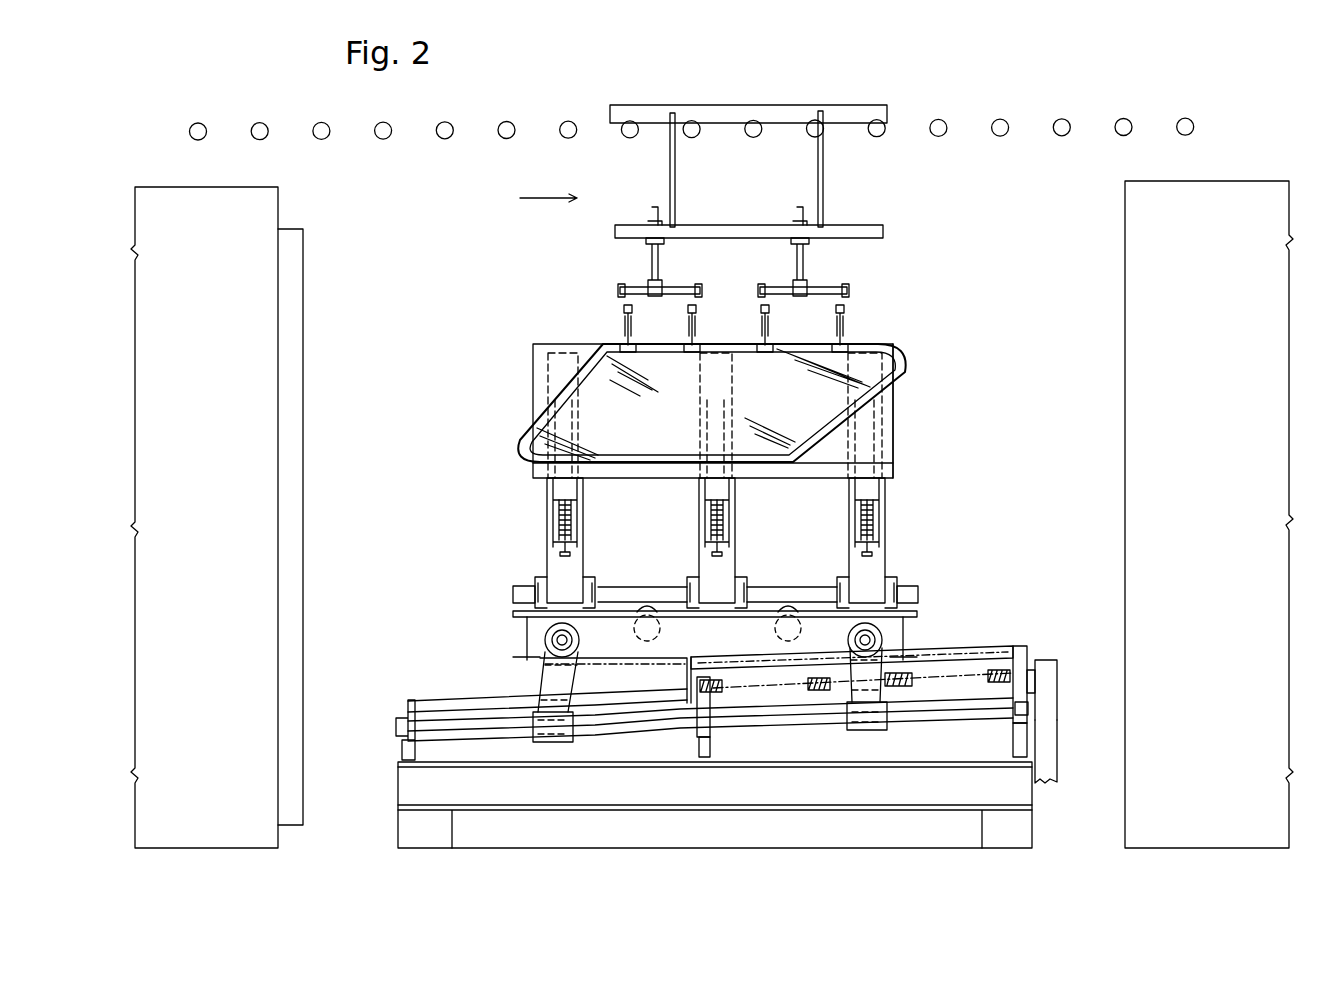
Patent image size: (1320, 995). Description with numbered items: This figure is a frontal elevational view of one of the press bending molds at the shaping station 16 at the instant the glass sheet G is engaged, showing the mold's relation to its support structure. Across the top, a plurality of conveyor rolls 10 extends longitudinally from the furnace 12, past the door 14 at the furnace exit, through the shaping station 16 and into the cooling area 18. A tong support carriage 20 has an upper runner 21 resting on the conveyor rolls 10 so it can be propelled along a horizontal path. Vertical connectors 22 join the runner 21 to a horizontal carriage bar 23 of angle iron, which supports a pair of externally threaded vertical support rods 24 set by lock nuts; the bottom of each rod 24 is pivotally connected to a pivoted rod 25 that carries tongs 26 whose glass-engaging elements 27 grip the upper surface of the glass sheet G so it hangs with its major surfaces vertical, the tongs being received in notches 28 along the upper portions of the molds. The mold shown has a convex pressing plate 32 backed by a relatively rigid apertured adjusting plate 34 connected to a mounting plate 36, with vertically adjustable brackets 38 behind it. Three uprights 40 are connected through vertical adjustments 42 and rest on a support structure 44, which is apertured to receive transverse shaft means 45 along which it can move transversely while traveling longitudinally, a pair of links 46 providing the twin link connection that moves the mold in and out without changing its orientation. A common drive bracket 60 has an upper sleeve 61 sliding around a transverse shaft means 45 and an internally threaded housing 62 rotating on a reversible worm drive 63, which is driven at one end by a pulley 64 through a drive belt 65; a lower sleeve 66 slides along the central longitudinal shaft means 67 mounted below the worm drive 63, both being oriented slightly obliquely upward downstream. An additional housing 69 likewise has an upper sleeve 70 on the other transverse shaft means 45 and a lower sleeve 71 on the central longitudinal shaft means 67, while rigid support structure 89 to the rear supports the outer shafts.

The conveyor rolls 10 is at (448, 139).
The furnace 12 is at (222, 190).
The door 14 is at (293, 540).
The shaping station 16 is at (559, 230).
The cooling area 18 is at (1219, 168).
The tong support carriage 20 is at (762, 228).
The upper runner 21 is at (727, 122).
The vertical connectors 22 is at (670, 158).
The horizontal carriage bar 23 is at (718, 227).
The vertical support rods 24 is at (658, 266).
The pivoted rod 25 is at (792, 288).
The tongs 26 is at (694, 325).
The glass-engaging elements 27 is at (629, 346).
The notches 28 is at (773, 349).
The convex pressing plate 32 is at (915, 363).
The apertured adjusting plate 34 is at (893, 468).
The mounting plates 36 is at (895, 440).
The vertically adjustable brackets 38 is at (533, 376).
The uprights 40 is at (583, 552).
The vertical adjustments 42 is at (572, 515).
The support structure 44 is at (697, 635).
The transverse shaft means 45 is at (579, 641).
The links 46 is at (646, 612).
The common drive bracket 60 is at (845, 662).
The upper sleeve 61 is at (906, 636).
The internally threaded housing 62 is at (840, 690).
The worm drive 63 is at (752, 697).
The pulley 64 is at (1060, 668).
The drive belt 65 is at (1052, 740).
The lower sleeve 66 is at (880, 730).
The central longitudinal shaft means 67 is at (791, 716).
The additional housing 69 is at (566, 682).
The upper sleeve 70 is at (527, 627).
The lower sleeve 71 is at (566, 742).
The rigid support structure 89 is at (760, 587).
The glass sheet G is at (776, 462).